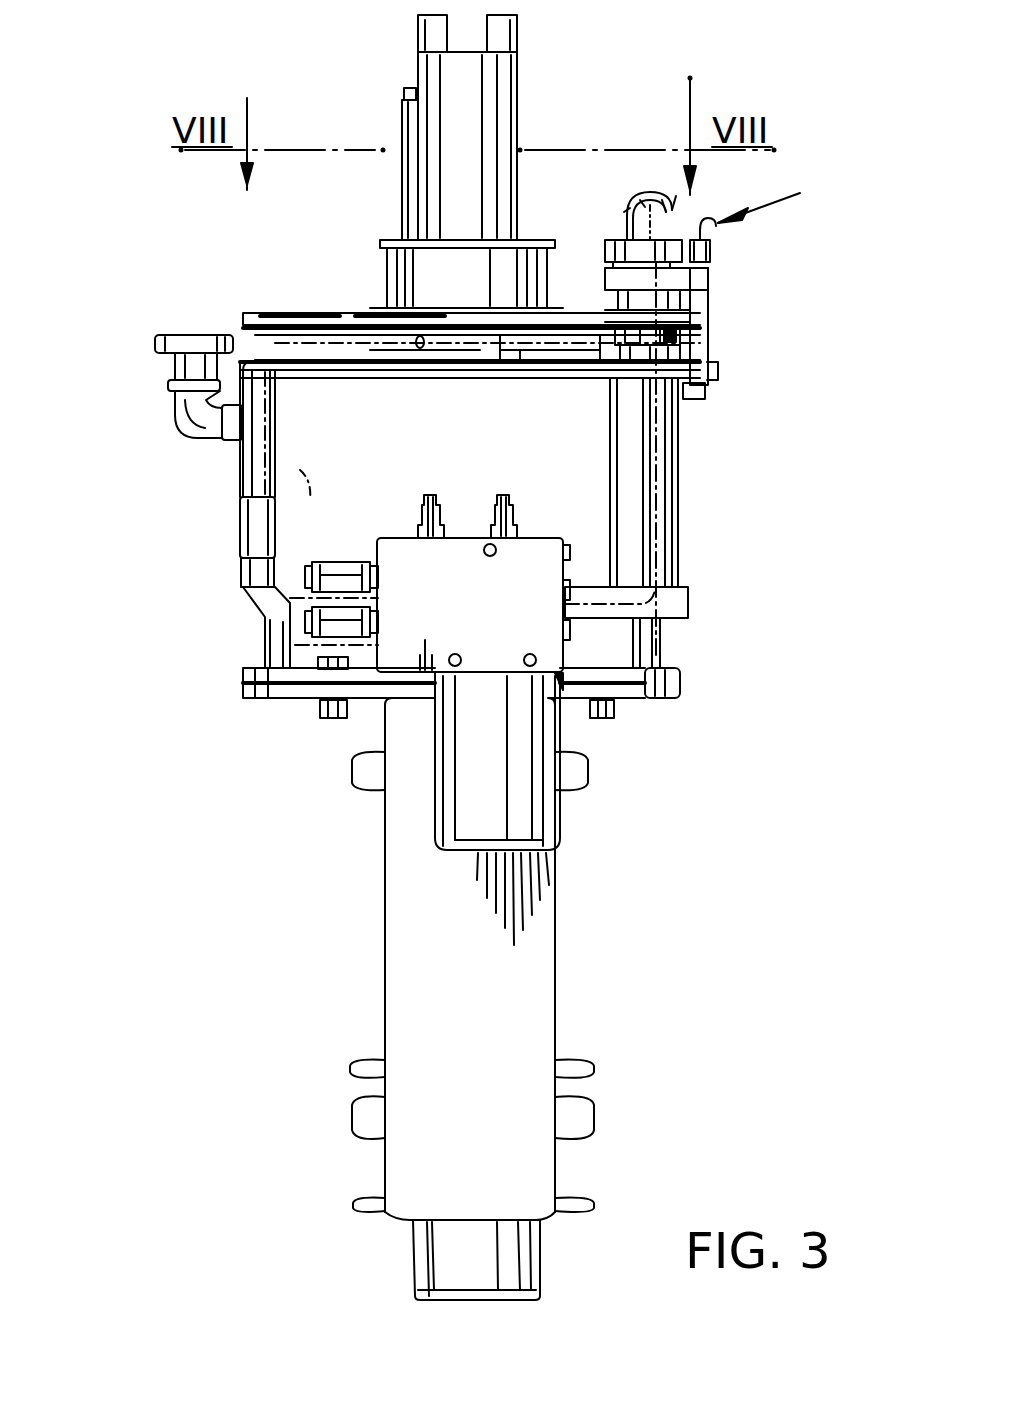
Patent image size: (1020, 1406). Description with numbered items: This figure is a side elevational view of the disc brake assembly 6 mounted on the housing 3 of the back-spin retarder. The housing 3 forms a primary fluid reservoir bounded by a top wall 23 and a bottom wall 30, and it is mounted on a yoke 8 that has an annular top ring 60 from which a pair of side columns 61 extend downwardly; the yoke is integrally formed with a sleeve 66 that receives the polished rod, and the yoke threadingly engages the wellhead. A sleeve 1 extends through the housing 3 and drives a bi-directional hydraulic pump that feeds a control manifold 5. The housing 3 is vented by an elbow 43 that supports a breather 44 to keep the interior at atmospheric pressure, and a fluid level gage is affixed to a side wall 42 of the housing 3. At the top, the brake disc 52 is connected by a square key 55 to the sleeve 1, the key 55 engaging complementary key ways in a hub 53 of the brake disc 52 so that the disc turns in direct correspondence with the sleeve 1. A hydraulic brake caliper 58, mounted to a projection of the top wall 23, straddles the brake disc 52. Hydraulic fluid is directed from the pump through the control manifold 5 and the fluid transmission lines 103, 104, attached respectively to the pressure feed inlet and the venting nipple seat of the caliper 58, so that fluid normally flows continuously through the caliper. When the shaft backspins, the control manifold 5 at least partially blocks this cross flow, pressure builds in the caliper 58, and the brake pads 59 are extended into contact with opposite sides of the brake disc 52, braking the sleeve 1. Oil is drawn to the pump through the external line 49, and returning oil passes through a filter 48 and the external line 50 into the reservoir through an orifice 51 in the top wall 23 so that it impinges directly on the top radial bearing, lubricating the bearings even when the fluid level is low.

The sleeve 1 is at (505, 94).
The housing 3 is at (370, 502).
The control manifold 5 is at (476, 618).
The disc brake assembly 6 is at (773, 194).
The yoke 8 is at (482, 1092).
The top wall 23 is at (290, 378).
The bottom wall 30 is at (680, 663).
The side wall 42 is at (250, 460).
The elbow 43 is at (185, 408).
The breather 44 is at (190, 335).
The filter 48 is at (448, 812).
The external line 49 is at (634, 204).
The external line 50 is at (309, 569).
The orifice 51 is at (418, 350).
The brake disc 52 is at (280, 313).
The hub 53 is at (392, 245).
The key 55 is at (404, 120).
The brake caliper 58 is at (697, 307).
The brake pads 59 is at (682, 327).
The top ring 60 is at (660, 700).
The side columns 61 is at (535, 1010).
The sleeve 66 is at (440, 1255).
The fluid transmission line 103 is at (705, 225).
The fluid transmission line 104 is at (640, 195).